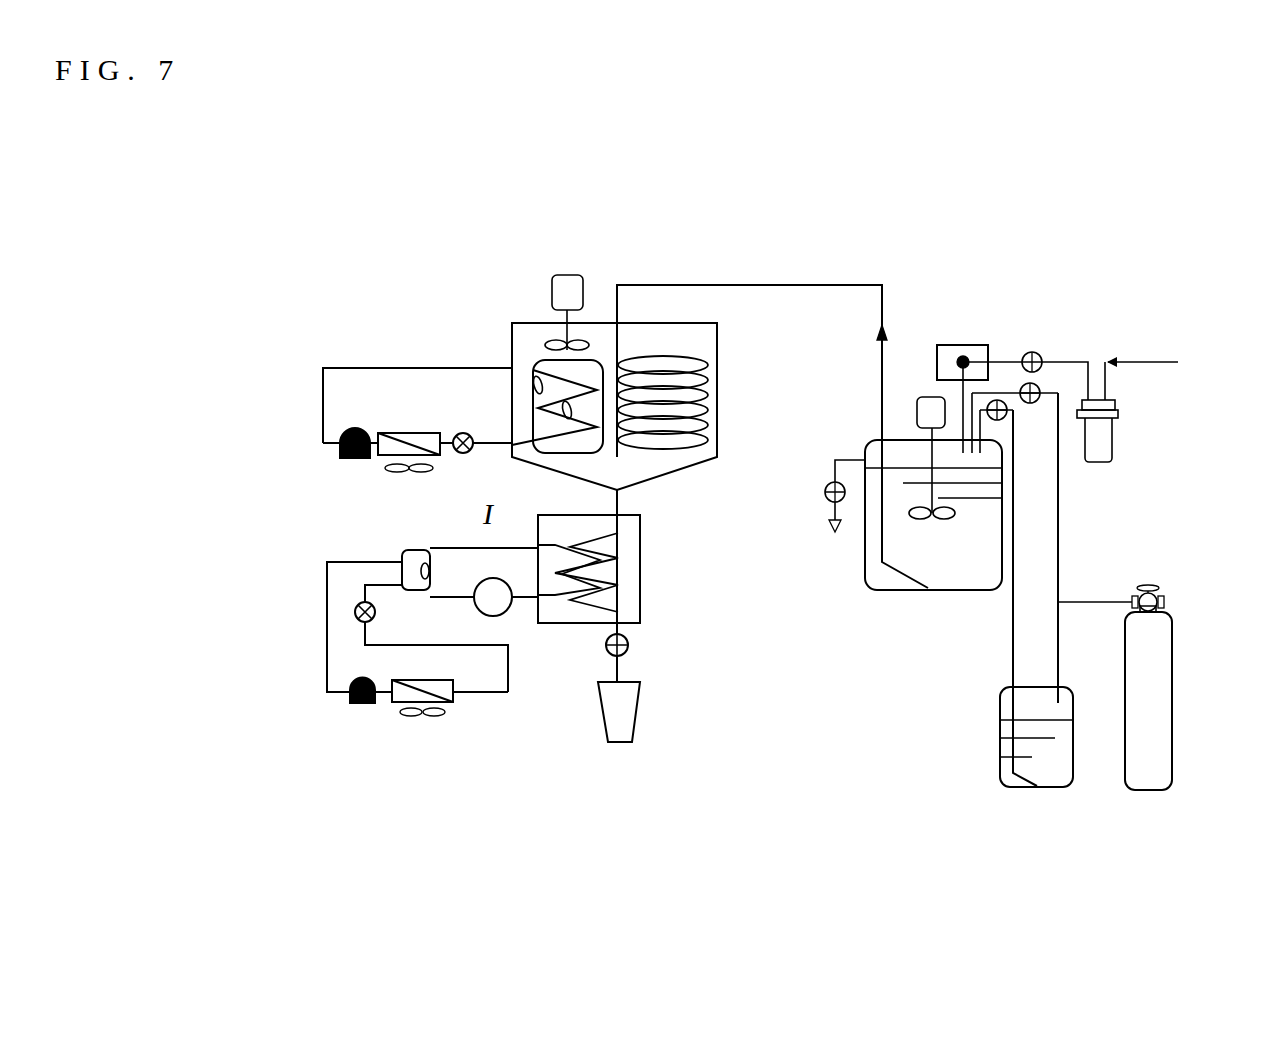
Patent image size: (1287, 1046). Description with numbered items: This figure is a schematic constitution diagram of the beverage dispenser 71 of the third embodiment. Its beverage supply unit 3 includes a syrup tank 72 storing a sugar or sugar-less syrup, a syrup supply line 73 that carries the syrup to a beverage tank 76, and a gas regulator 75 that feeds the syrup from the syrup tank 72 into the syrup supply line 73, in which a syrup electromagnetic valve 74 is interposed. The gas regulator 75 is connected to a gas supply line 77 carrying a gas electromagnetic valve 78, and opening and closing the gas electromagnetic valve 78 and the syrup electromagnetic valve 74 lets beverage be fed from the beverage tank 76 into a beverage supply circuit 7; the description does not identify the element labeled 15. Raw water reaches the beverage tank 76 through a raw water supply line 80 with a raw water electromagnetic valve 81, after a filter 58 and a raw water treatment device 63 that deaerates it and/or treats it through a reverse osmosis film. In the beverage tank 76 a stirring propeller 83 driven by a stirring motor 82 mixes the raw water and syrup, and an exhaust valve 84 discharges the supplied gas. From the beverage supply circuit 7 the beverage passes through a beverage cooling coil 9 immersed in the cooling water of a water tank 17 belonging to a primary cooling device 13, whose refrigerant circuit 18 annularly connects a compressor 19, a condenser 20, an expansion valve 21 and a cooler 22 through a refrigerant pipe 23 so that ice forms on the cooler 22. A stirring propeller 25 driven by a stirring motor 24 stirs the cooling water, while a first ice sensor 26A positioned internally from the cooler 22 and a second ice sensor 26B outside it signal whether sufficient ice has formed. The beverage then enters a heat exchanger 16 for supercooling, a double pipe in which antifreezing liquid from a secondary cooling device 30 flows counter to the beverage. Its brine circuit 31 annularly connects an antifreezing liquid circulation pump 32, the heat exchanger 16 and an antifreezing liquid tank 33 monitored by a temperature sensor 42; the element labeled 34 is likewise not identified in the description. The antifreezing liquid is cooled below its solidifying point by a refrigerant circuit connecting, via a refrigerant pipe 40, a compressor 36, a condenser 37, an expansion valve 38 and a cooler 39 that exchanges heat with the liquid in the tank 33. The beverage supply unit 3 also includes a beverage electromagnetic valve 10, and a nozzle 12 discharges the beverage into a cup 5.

The beverage supply unit 3 is at (1166, 280).
The cup 5 is at (624, 722).
The beverage supply circuit 7 is at (788, 283).
The beverage cooling coil 9 is at (702, 380).
The beverage electromagnetic valve 10 is at (630, 650).
The nozzle 12 is at (597, 685).
The primary cooling device 13 is at (307, 320).
The gas cylinder 15 is at (1158, 752).
The heat exchanger for supercooling the beverage 16 is at (670, 575).
The water tank 17 is at (684, 323).
The refrigerant circuit 18 is at (370, 368).
The compressor 19 is at (348, 458).
The condenser 20 is at (398, 436).
The expansion valve 21 is at (461, 433).
The cooler 22 is at (587, 372).
The refrigerant pipe 23 is at (322, 402).
The stirring motor 24 is at (567, 285).
The stirring propeller 25 is at (554, 343).
The first ice sensor 26A is at (575, 416).
The second ice sensor 26B is at (535, 382).
The secondary cooling device 30 is at (303, 737).
The brine circuit 31 is at (540, 598).
The antifreezing liquid circulation pump 32 is at (494, 616).
The antifreezing liquid tank 33 is at (405, 555).
The heat exchanger 34 is at (643, 612).
The compressor 36 is at (355, 703).
The condenser 37 is at (414, 702).
The expansion valve 38 is at (353, 615).
The cooler 39 is at (402, 568).
The refrigerant pipe 40 is at (327, 672).
The temperature sensor 42 is at (425, 564).
The filter 58 is at (1100, 455).
The raw water treatment device 63 is at (962, 350).
The beverage dispenser 71 is at (427, 233).
The syrup tank 72 is at (1047, 768).
The syrup supply line 73 is at (1012, 643).
The syrup electromagnetic valve 74 is at (1003, 418).
The gas regulator 75 is at (1152, 594).
The beverage tank 76 is at (900, 590).
The gas supply line 77 is at (1060, 560).
The gas electromagnetic valve 78 is at (1040, 399).
The raw water supply line 80 is at (1073, 362).
The raw water electromagnetic valve 81 is at (1038, 354).
The stirring motor 82 is at (919, 397).
The stirring propeller 83 is at (917, 520).
The exhaust valve 84 is at (824, 489).